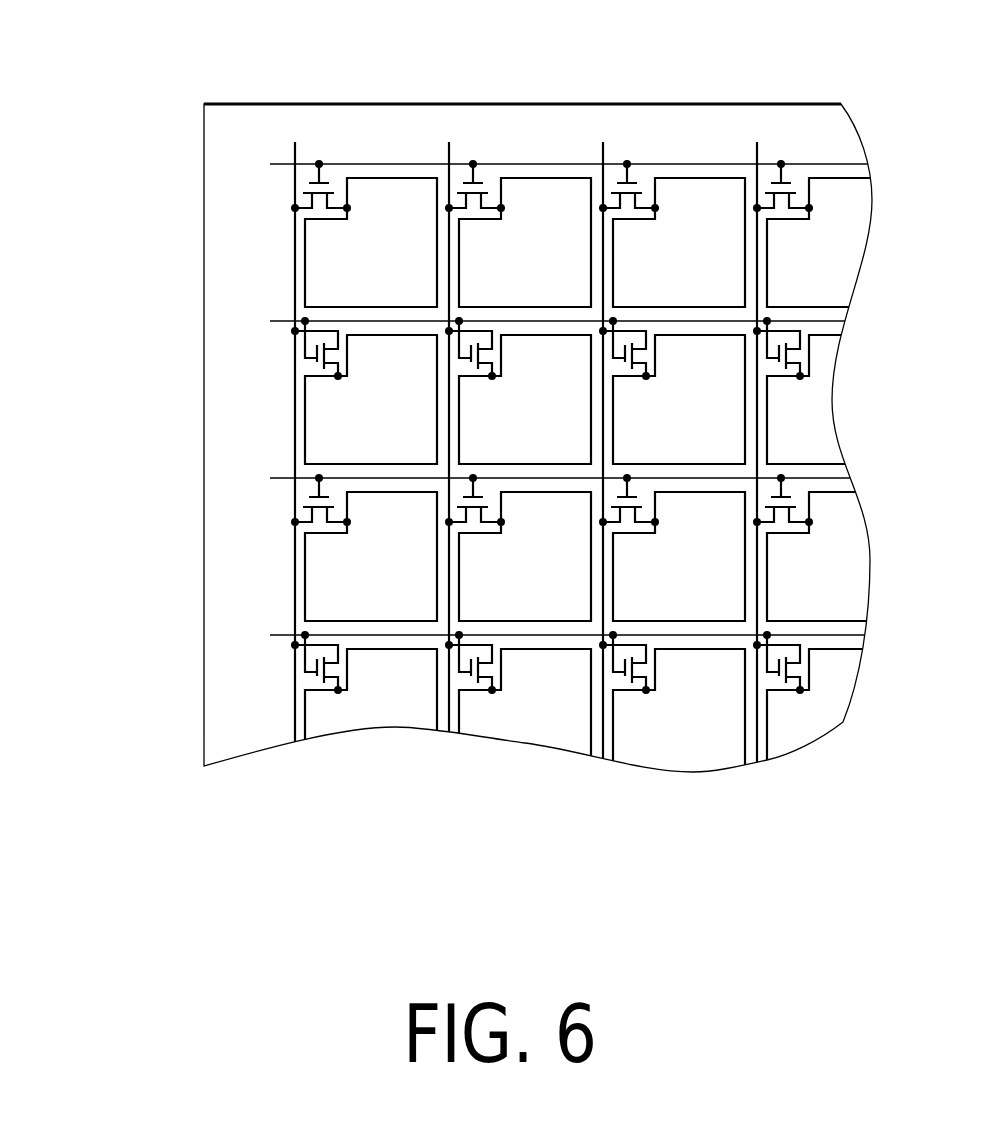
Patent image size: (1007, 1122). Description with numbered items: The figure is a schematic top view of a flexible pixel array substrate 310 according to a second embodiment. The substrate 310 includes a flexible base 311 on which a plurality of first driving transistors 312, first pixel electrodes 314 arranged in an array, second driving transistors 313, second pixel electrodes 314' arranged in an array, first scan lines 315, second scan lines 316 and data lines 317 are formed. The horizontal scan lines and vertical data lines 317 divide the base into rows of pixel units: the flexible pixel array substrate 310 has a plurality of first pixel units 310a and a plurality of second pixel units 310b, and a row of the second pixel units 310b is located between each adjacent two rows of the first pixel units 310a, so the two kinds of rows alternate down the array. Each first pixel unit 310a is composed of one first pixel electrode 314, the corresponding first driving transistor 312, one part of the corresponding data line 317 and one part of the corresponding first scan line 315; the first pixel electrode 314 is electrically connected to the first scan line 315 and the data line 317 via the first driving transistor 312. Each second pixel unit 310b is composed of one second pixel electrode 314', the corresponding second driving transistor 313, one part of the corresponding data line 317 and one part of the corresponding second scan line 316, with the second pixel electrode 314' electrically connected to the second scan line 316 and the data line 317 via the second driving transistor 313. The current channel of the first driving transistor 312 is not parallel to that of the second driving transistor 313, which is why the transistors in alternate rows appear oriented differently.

The flexible pixel array substrate 310 is at (481, 443).
The first pixel unit 310a is at (499, 153).
The second pixel unit 310b is at (250, 516).
The flexible base 311 is at (225, 530).
The first driving transistor 312 is at (336, 160).
The second driving transistor 313 is at (287, 376).
The first pixel electrode 314 is at (395, 156).
The second pixel electrode 314' is at (251, 480).
The first scan line 315 is at (275, 164).
The second scan line 316 is at (282, 321).
The data line 317 is at (300, 192).